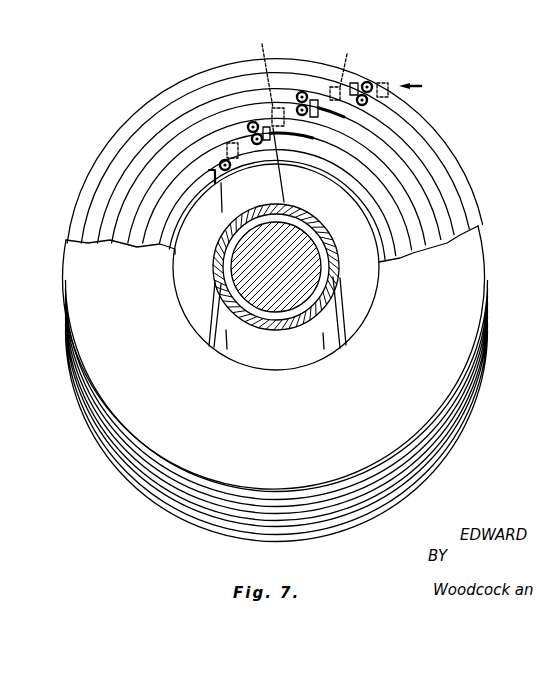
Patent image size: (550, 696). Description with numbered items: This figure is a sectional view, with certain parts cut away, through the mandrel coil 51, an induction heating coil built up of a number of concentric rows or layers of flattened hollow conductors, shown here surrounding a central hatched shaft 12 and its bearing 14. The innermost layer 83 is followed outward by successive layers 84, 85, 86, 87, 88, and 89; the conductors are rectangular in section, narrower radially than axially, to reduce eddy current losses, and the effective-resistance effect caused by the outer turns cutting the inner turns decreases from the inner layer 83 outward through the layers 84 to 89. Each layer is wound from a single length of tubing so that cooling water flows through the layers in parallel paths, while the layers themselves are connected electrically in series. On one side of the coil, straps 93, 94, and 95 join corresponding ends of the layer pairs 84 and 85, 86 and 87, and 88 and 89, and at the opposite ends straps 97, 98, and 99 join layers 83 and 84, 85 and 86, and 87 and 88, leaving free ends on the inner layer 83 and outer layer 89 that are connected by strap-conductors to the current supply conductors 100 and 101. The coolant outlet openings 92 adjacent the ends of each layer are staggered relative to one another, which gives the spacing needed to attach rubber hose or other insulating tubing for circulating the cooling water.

The shaft 12 is at (242, 278).
The bearing 14 is at (323, 293).
The mandrel coil 51 is at (536, 282).
The inner layer 83 is at (312, 160).
The layer 84 is at (355, 167).
The layer 85 is at (387, 177).
The layer 86 is at (405, 183).
The layer 87 is at (430, 191).
The layer 88 is at (448, 207).
The layer 89 is at (467, 217).
The outlet pipes 92 is at (301, 91).
The strap 93 is at (287, 169).
The strap 94 is at (315, 106).
The strap 95 is at (371, 82).
The strap 97 is at (248, 171).
The strap 98 is at (266, 77).
The strap 99 is at (355, 83).
The conductor 100 is at (220, 186).
The conductor 101 is at (419, 80).